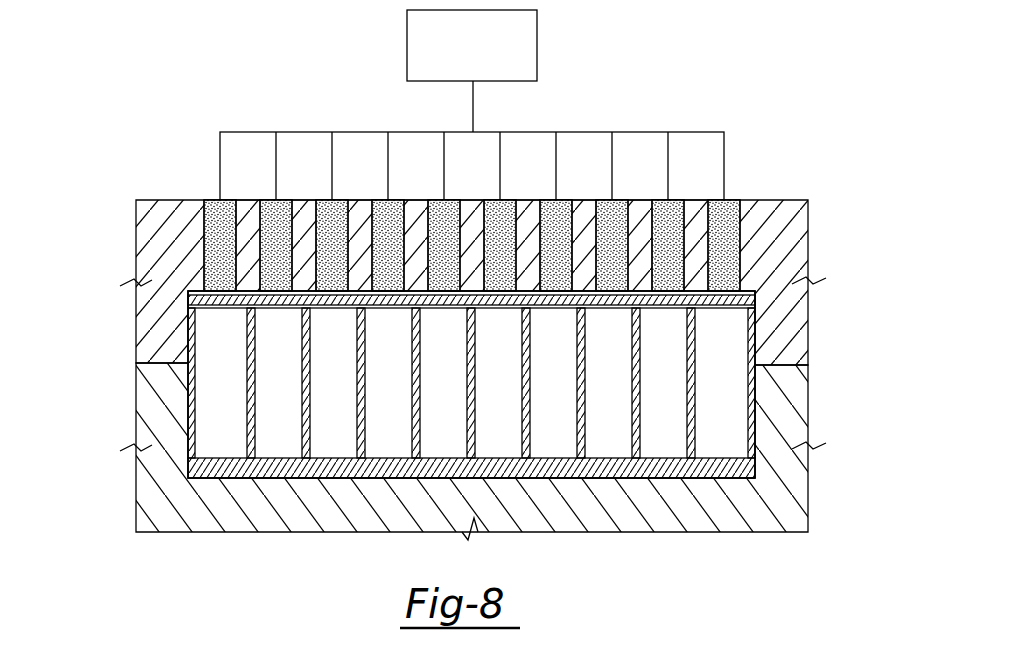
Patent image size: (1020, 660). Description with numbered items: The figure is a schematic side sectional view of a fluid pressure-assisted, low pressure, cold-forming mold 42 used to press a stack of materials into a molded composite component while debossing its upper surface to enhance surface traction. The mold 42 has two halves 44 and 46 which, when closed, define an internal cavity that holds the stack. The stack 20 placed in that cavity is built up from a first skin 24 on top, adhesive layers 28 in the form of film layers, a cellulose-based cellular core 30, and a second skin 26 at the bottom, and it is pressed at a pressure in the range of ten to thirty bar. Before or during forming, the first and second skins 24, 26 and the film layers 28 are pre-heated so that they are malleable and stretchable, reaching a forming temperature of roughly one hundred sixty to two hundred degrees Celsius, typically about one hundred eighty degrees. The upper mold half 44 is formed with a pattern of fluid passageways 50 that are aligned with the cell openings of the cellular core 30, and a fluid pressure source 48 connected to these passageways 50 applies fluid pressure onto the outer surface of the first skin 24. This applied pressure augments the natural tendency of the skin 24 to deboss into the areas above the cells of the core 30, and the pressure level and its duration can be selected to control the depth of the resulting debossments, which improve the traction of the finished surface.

The heat exchanger core 20 is at (757, 463).
The first skin 24 is at (757, 296).
The second skin 26 is at (752, 470).
The adhesive layers 28 is at (757, 310).
The cellulose-based cellular core 30 is at (740, 393).
The cold-forming mold 42 is at (715, 78).
The mold half 44 is at (146, 300).
The mold half 46 is at (160, 424).
The fluid pressure source 48 is at (407, 48).
The fluid passageways 50 is at (736, 197).